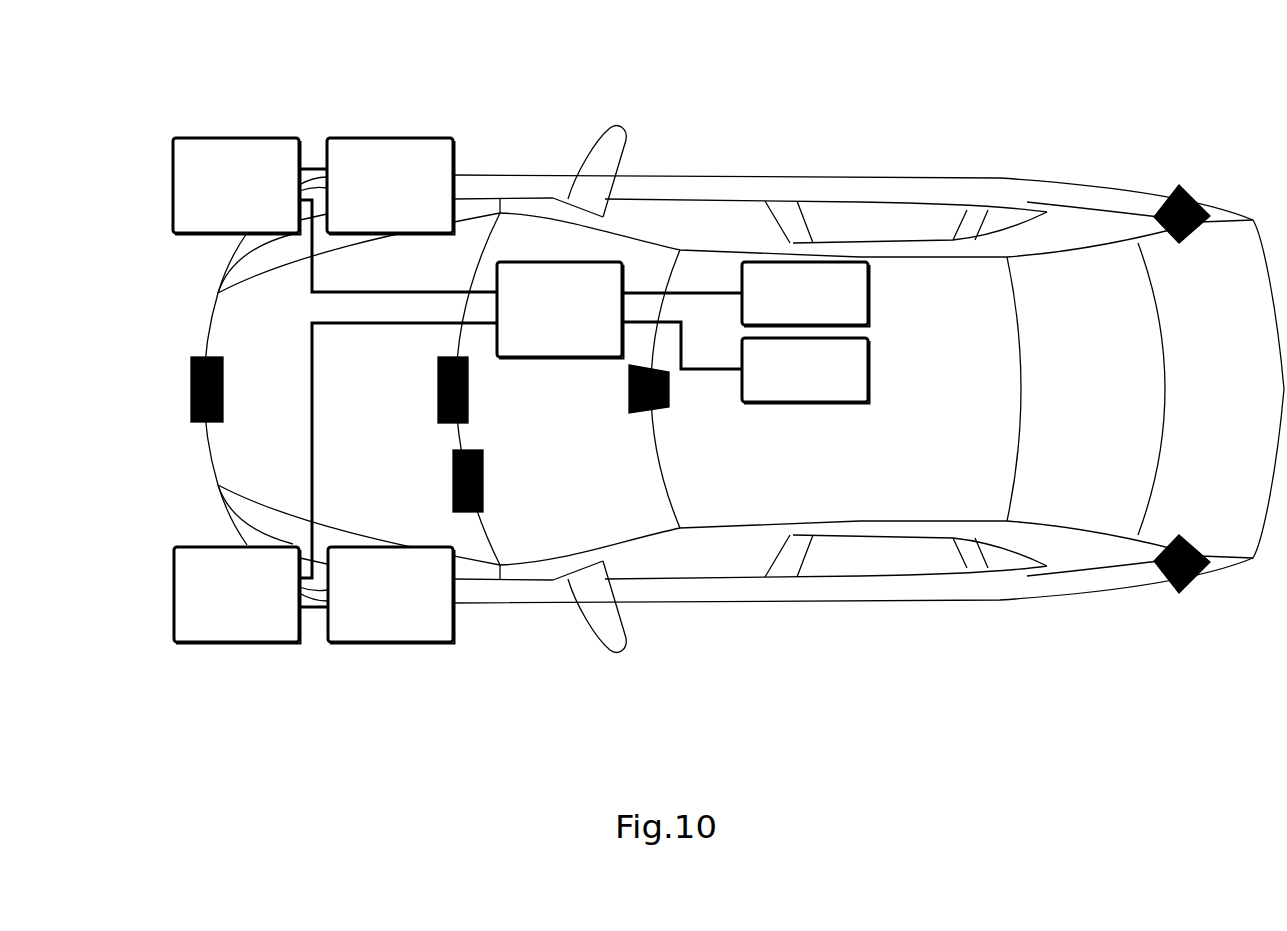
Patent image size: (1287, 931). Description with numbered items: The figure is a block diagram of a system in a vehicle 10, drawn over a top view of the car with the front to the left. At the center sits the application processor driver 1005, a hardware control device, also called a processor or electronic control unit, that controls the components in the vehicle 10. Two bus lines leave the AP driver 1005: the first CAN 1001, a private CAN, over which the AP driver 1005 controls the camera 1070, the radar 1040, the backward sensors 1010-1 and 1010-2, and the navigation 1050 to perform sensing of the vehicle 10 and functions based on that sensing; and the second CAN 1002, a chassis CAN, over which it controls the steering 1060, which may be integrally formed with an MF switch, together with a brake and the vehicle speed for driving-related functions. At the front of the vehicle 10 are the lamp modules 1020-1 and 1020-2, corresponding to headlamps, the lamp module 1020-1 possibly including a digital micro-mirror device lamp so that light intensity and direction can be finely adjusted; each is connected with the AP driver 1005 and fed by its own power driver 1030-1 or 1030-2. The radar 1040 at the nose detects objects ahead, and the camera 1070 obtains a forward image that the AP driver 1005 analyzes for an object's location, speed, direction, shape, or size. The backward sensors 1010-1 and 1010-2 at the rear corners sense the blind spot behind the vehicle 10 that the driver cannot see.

The vehicle 10 is at (903, 88).
The first controller area network (CAN) 1001 is at (783, 317).
The second CAN 1002 is at (783, 394).
The application processor (AP) driver 1005 is at (537, 332).
The backward sensor 1010-1 is at (1163, 202).
The backward sensor 1010-2 is at (1163, 578).
The lamp module 1020-1 is at (270, 209).
The lamp module 1020-2 is at (270, 617).
The power driver 1030-1 is at (355, 221).
The power driver 1030-2 is at (355, 631).
The radar 1040 is at (191, 388).
The navigation 1050 is at (468, 384).
The steering 1060 is at (483, 478).
The camera 1070 is at (669, 392).